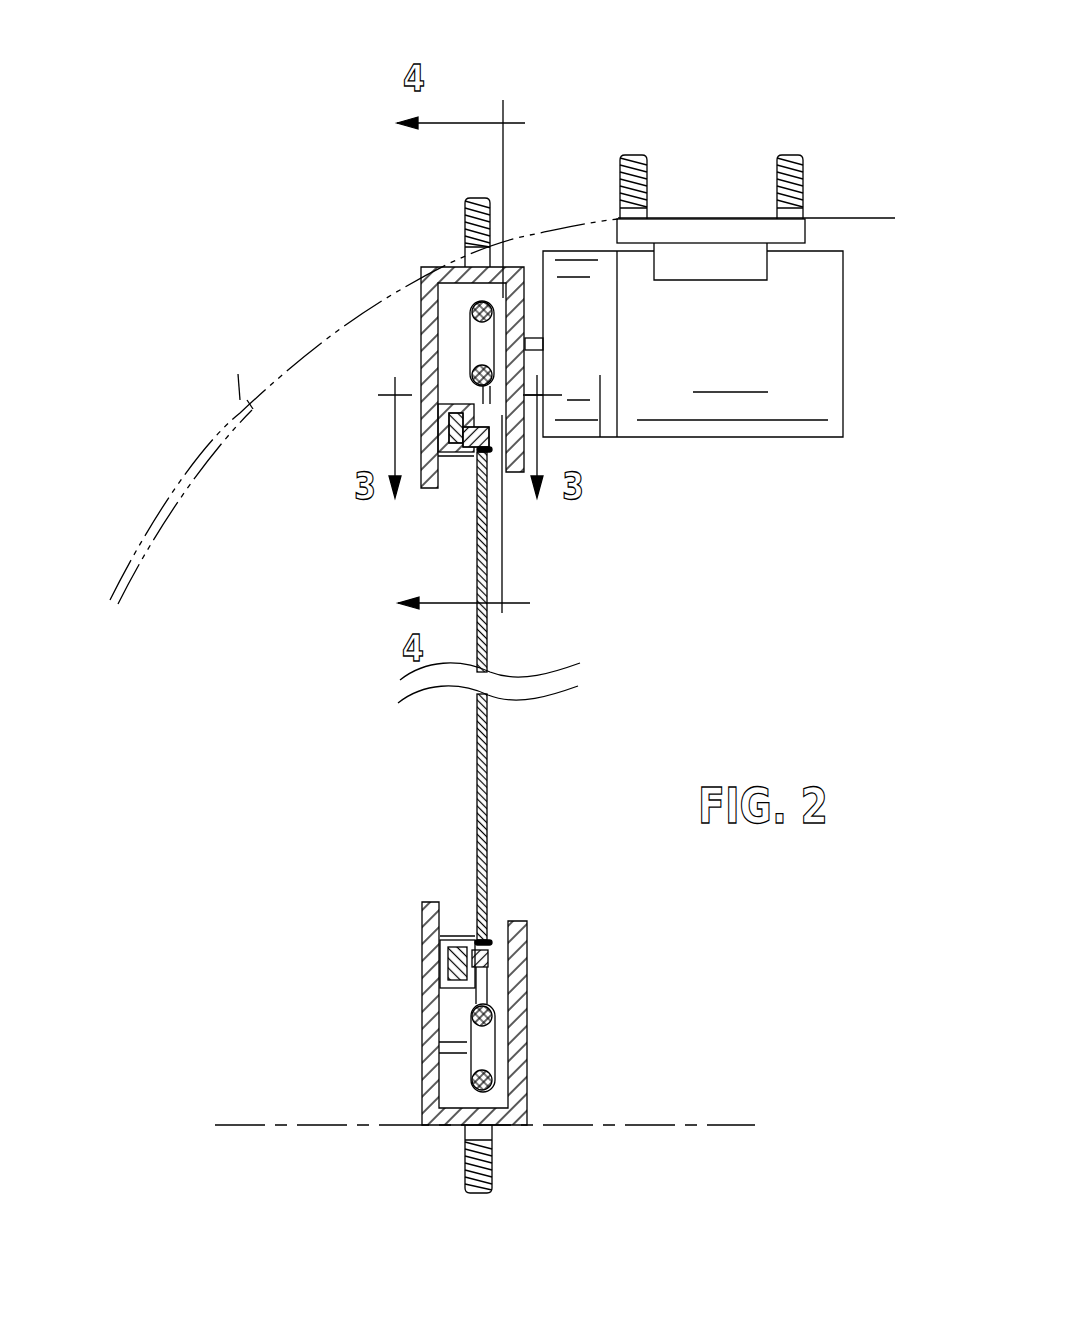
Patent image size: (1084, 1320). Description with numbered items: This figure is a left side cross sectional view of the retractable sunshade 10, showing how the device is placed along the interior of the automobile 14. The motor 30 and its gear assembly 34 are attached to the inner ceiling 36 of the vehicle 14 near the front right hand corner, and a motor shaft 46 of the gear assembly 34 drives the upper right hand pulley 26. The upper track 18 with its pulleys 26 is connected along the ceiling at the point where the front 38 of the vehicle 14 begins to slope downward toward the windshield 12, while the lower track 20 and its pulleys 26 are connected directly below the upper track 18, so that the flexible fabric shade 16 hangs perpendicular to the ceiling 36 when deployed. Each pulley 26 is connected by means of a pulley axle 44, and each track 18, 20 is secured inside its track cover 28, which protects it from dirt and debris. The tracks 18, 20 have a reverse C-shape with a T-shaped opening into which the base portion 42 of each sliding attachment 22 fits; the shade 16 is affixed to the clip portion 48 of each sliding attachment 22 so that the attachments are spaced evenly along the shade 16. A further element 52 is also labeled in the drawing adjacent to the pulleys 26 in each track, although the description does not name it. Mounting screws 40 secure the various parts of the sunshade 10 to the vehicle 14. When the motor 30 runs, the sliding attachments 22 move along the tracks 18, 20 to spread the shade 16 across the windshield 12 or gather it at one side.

The retractable sunshade 10 is at (240, 125).
The front windshield 12 is at (180, 467).
The automobile 14 is at (870, 218).
The flexible fabric shade 16 is at (488, 817).
The upper track 18 is at (438, 458).
The lower track 20 is at (462, 940).
The sliding attachment 22 is at (468, 450).
The pulley 26 is at (470, 333).
The track cover 28 is at (422, 287).
The reversible electric motor 30 is at (808, 358).
The gear assembly 34 is at (600, 375).
The inner ceiling 36 is at (815, 218).
The front of the vehicle 38 is at (452, 646).
The mounting screw 40 is at (465, 208).
The base portion 42 is at (480, 398).
The pulley axle 44 is at (453, 1045).
The motor shaft 46 is at (533, 338).
The clip portion 48 is at (478, 500).
The guide pin 52 is at (472, 368).